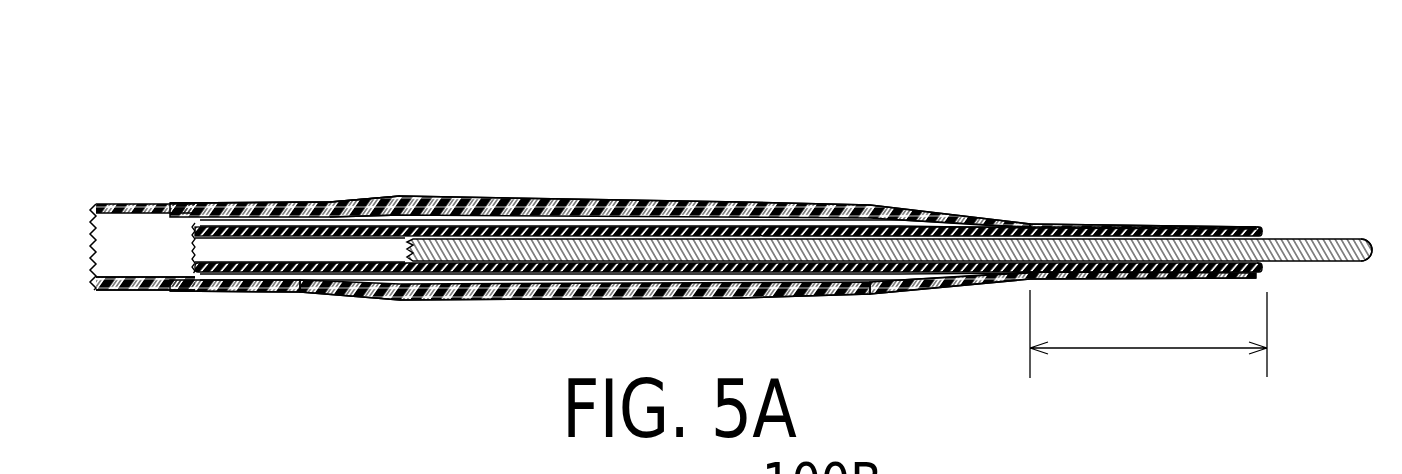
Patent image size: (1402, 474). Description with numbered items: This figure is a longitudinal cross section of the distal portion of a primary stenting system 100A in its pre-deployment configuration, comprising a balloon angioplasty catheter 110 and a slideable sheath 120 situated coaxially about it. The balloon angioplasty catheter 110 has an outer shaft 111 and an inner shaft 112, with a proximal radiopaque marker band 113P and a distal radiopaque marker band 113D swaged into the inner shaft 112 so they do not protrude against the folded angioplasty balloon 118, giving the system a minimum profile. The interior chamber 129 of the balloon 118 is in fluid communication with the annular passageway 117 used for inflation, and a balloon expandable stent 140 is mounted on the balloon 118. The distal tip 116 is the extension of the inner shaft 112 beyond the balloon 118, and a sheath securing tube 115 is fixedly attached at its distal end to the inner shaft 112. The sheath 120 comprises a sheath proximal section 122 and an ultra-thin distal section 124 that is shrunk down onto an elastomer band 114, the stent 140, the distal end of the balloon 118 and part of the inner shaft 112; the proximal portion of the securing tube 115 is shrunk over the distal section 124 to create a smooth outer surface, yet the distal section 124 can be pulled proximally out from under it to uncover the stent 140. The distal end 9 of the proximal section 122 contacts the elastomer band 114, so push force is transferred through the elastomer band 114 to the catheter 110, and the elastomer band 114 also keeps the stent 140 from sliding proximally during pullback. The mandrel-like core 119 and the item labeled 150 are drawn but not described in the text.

The primary stenting system 100A is at (737, 148).
The balloon angioplasty catheter 110 is at (1273, 275).
The outer shaft 111 is at (219, 288).
The inner shaft 112 is at (280, 240).
The proximal radiopaque marker band 113P is at (488, 230).
The distal radiopaque marker band 113D is at (899, 212).
The elastomer band 114 is at (289, 203).
The sheath securing tube 115 is at (1226, 228).
The distal tip 116 is at (1100, 283).
The annular passageway 117 is at (191, 229).
The folded angioplasty balloon 118 is at (911, 208).
The mandrel 119 is at (1265, 244).
The slideable sheath 120 is at (145, 177).
The sheath proximal section 122 is at (117, 291).
The ultra-thin distal section 124 is at (913, 294).
The interior chamber 129 is at (648, 204).
The balloon expandable stent 140 is at (489, 291).
The mandrel distal end 150 is at (1363, 265).
The distal end 9 is at (266, 203).